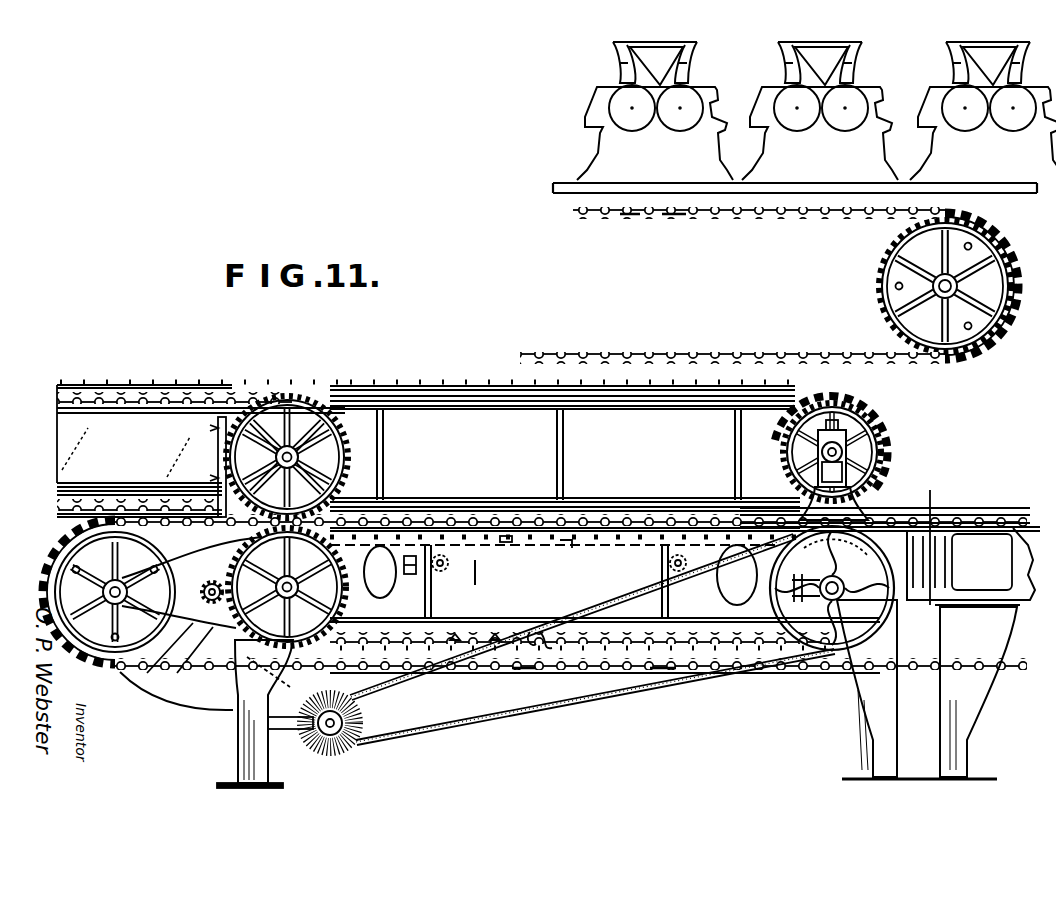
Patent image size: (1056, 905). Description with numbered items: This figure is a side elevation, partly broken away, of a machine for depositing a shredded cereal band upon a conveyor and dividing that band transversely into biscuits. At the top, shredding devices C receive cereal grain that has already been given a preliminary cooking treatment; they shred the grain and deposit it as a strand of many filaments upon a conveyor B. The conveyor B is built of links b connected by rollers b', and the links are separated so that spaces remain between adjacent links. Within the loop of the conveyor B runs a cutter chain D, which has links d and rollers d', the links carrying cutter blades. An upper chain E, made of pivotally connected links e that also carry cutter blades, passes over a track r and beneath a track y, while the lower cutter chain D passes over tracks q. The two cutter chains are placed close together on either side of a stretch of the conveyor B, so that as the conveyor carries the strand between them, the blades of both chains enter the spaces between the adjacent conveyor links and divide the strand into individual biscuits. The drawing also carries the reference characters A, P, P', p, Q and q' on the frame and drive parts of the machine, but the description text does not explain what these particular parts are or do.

The main frame A is at (605, 583).
The conveyor B is at (571, 458).
The links b is at (580, 463).
The rollers b' is at (646, 463).
The shredding devices C is at (811, 111).
The cutter chain D is at (687, 634).
The links d is at (456, 617).
The rollers d' is at (497, 617).
The upper chain E is at (76, 380).
The links e is at (262, 393).
The swing arm with pinion P is at (152, 615).
The sprocket wheel P' is at (319, 529).
The pin p is at (508, 542).
The rotary brush Q is at (311, 734).
The tracks q is at (380, 572).
The stop q' is at (577, 555).
The track r is at (445, 392).
The track y is at (483, 581).